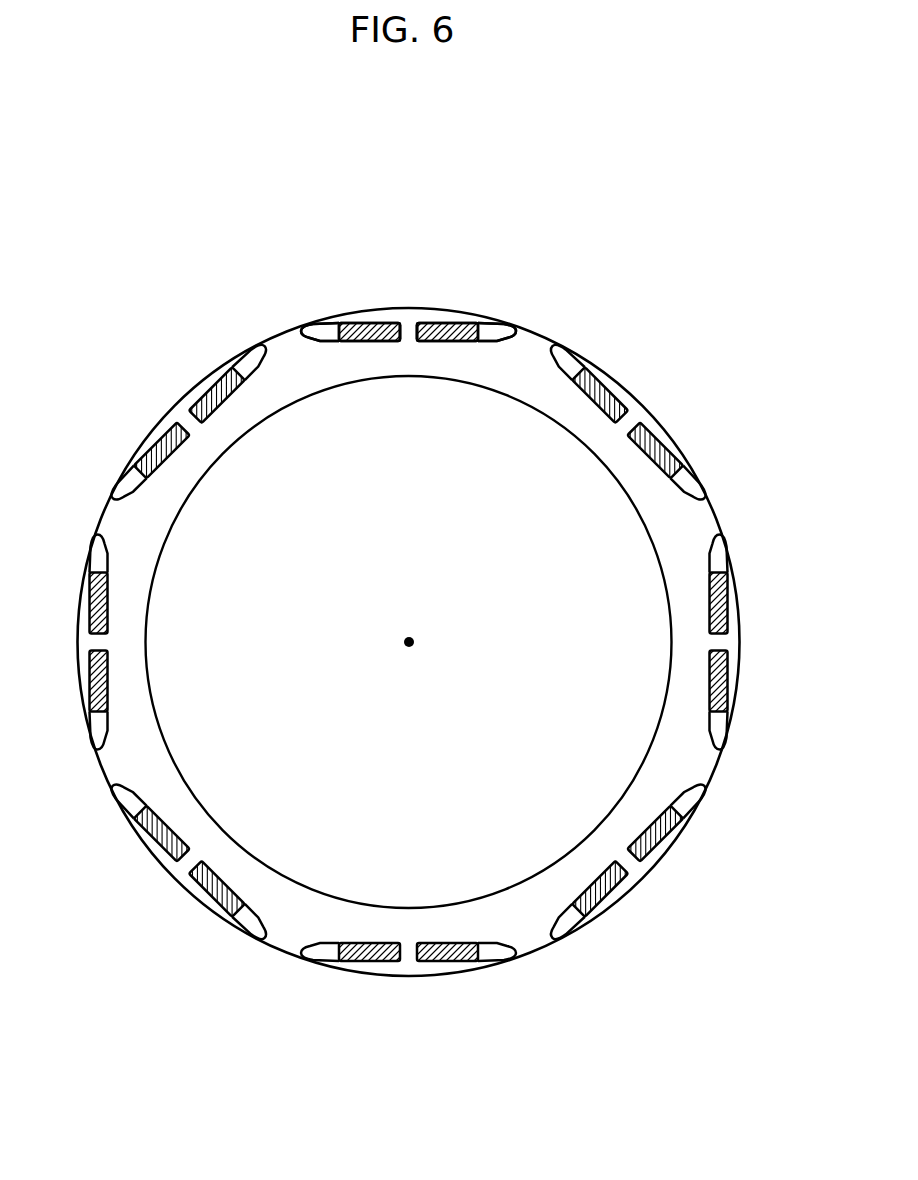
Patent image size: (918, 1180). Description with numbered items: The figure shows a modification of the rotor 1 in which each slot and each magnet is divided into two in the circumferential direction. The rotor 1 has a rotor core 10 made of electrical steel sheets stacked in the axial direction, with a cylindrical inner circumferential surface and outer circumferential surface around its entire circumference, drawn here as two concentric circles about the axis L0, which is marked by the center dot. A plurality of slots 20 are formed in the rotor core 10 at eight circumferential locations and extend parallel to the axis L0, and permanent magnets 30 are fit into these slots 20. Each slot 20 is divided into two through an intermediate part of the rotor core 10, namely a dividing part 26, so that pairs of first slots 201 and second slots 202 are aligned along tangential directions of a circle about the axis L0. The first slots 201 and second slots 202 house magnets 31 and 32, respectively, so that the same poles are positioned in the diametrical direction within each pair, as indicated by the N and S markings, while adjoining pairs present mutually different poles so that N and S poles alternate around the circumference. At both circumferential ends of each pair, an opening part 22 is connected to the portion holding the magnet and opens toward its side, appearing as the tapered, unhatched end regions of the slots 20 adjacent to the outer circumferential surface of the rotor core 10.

The rotor 1 is at (702, 298).
The rotor core 10 is at (720, 517).
The slots 20 is at (348, 156).
The first slots 201 is at (393, 323).
The second slots 202 is at (428, 323).
The opening part 22 is at (323, 330).
The dividing parts 26 is at (410, 333).
The permanent magnets 30 is at (472, 509).
The magnet 31 is at (347, 343).
The magnet 32 is at (470, 343).
The axis L0 is at (412, 643).